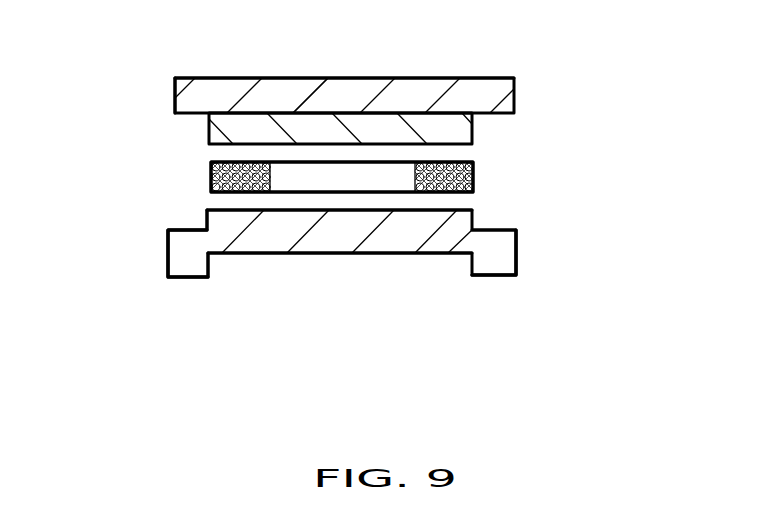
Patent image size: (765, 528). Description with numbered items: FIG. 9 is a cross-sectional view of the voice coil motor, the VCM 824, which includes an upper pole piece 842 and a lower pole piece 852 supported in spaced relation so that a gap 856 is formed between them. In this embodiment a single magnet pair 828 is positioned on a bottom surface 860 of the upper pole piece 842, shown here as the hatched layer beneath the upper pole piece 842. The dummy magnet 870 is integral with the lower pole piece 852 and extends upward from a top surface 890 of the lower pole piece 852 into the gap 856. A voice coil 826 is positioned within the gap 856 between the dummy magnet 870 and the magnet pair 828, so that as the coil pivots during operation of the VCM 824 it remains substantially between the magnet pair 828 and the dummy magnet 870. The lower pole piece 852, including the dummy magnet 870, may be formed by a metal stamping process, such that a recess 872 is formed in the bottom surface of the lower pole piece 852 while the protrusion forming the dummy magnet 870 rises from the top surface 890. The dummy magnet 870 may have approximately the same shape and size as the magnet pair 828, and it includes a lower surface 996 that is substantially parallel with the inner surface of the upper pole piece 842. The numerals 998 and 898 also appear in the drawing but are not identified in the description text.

The VCM 824 is at (252, 71).
The cover plate 998 is at (343, 77).
The upper pole piece 842 is at (400, 103).
The bottom surface 860 is at (183, 120).
The magnet pair 828 is at (472, 142).
The voice coil 826 is at (210, 172).
The gap 856 is at (510, 171).
The top surface 890 is at (176, 232).
The lower pole piece 852 is at (203, 259).
The lower surface 996 is at (278, 207).
The dummy magnet 870 is at (321, 212).
The recess 872 is at (410, 275).
The corner 898 is at (513, 252).